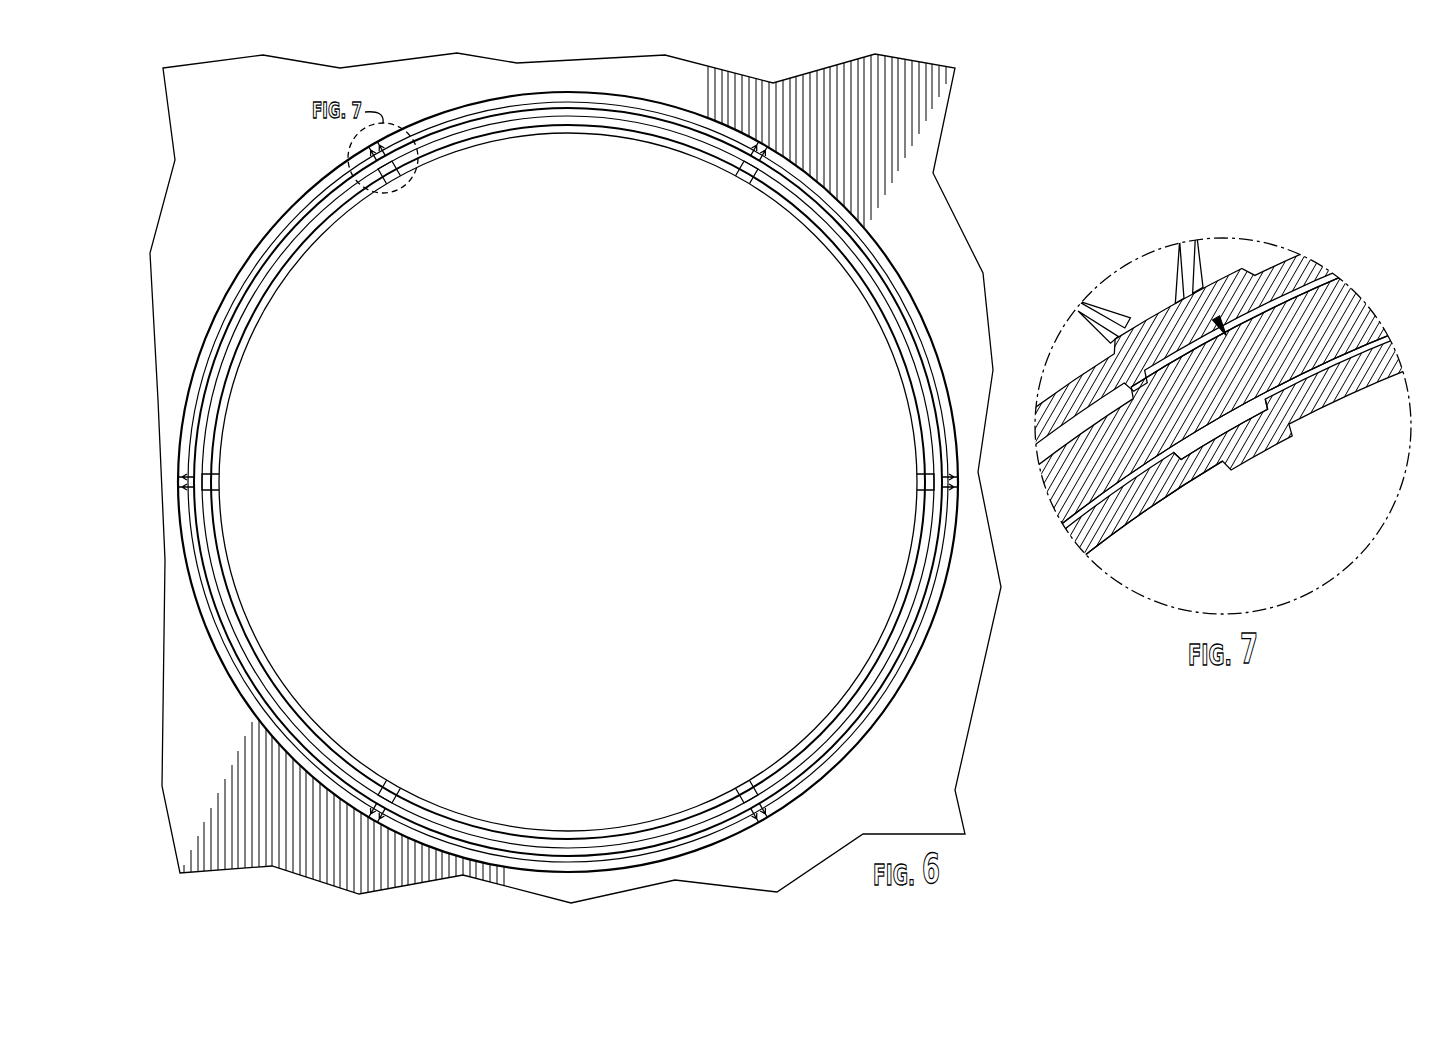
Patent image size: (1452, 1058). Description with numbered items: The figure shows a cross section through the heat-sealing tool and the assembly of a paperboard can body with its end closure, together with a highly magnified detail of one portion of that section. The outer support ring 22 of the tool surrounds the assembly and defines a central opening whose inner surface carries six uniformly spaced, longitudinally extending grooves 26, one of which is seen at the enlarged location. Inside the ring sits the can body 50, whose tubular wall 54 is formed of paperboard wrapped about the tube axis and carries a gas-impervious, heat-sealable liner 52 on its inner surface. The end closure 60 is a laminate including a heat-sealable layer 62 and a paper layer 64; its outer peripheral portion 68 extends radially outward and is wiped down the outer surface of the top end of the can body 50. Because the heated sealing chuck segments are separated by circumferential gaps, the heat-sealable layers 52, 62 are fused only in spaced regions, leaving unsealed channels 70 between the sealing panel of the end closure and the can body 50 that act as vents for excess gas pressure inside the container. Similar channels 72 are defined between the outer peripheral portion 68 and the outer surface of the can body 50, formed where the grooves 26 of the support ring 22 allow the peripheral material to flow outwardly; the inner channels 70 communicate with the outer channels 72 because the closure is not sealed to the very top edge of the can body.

In FIG. 6, the outer support ring 22 is at (910, 140).
In FIG. 6, the grooves 26 is at (397, 173).
In FIG. 7, the can body 50 is at (1195, 350).
In FIG. 7, the gas-impervious liner 52 is at (1390, 338).
In FIG. 7, the tubular wall 54 is at (1360, 297).
In FIG. 7, the end closure 60 is at (1120, 533).
In FIG. 7, the heat-sealable layer 62 is at (1046, 491).
In FIG. 7, the paper layer 64 is at (1080, 543).
In FIG. 7, the outer peripheral portion 68 is at (1321, 271).
In FIG. 7, the channels 70 is at (1231, 414).
In FIG. 7, the channels 72 is at (1176, 293).